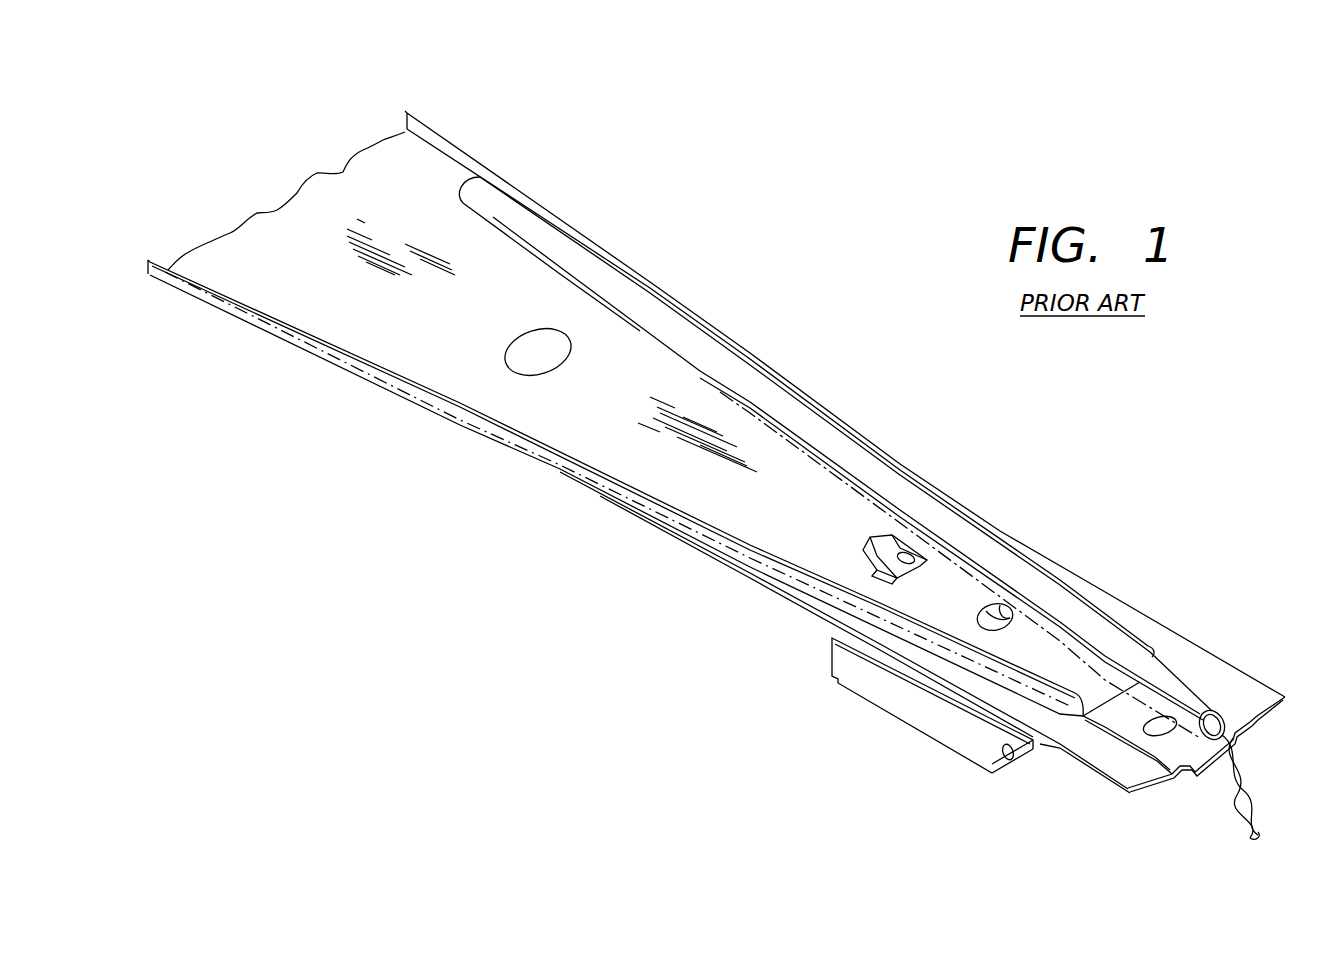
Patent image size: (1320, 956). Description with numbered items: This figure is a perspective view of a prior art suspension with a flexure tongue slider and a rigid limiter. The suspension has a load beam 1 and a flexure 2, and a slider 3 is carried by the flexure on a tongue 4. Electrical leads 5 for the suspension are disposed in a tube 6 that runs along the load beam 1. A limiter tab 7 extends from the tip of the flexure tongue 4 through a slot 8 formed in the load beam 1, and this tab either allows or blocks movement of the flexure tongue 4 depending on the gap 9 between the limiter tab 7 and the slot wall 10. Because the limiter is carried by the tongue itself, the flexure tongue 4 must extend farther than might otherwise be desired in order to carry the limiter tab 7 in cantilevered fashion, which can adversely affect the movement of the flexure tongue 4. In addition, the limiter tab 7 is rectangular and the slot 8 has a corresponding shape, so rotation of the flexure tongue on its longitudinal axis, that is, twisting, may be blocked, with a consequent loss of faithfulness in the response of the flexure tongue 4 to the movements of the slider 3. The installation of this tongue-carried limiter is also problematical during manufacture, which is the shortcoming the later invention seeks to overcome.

The load beam 1 is at (420, 182).
The flexure 2 is at (1170, 648).
The slider 3 is at (887, 690).
The flexure tongue 4 is at (943, 595).
The electrical leads 5 is at (1224, 810).
The tube 6 is at (645, 310).
The limiter tab 7 is at (886, 535).
The slot 8 is at (897, 553).
The gap 9 is at (880, 572).
The slot wall 10 is at (853, 577).